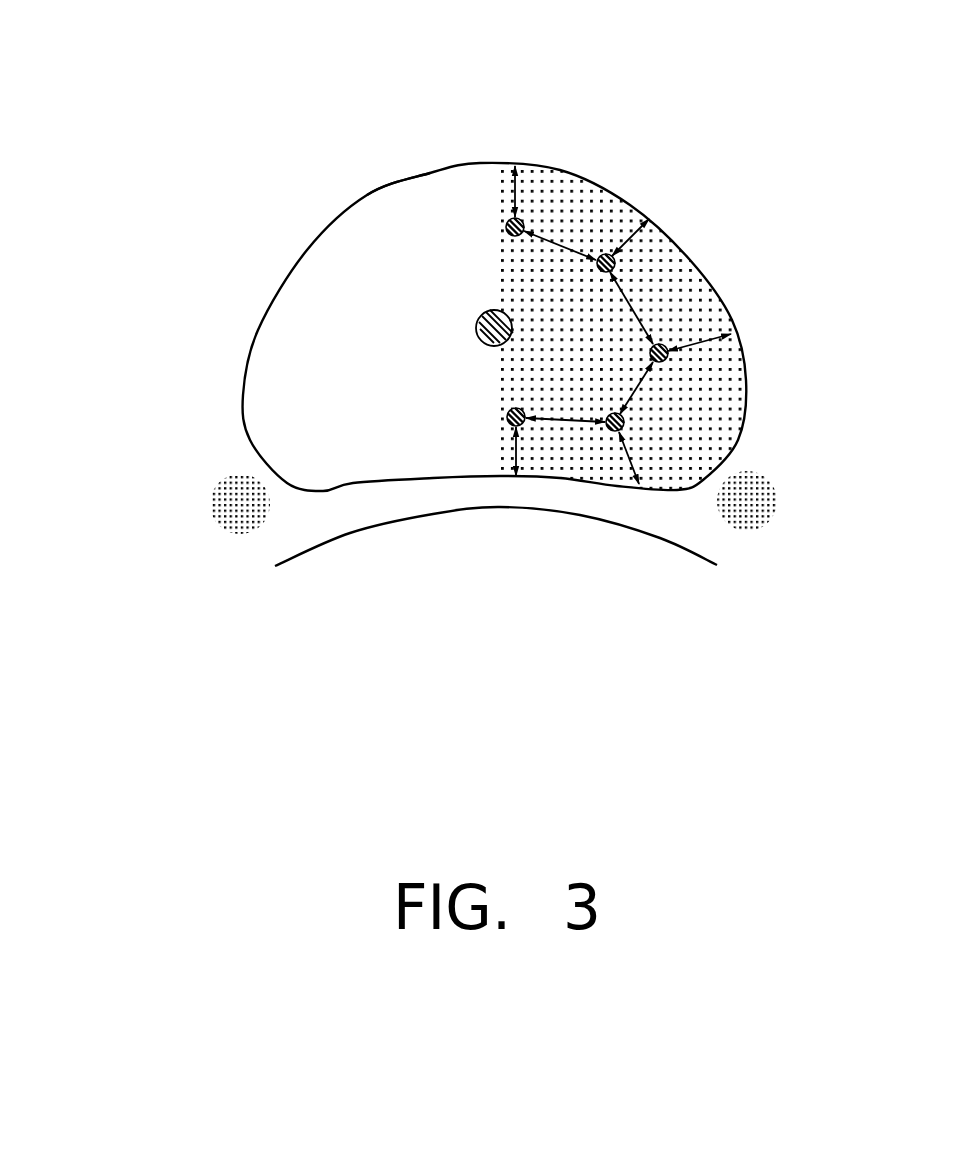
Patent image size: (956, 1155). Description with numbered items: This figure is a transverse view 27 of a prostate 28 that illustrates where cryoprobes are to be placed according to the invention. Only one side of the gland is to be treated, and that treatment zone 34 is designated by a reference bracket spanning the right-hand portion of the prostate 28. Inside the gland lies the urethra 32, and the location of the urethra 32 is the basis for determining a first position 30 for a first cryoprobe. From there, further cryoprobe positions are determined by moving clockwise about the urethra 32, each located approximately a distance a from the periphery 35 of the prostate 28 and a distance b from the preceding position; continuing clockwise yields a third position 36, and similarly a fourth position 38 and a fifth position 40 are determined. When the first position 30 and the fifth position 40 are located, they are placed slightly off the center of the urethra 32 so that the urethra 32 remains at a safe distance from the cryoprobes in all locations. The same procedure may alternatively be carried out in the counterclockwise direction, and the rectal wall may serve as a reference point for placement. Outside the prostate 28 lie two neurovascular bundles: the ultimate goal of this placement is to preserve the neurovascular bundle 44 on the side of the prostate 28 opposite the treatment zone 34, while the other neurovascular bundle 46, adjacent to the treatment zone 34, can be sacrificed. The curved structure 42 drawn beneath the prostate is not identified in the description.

The transverse view 27 is at (200, 311).
The prostate 28 is at (303, 254).
The first position 30 is at (523, 221).
The urethra 32 is at (611, 256).
The treatment zone 34 is at (747, 78).
The periphery 35 is at (368, 196).
The third position 36 is at (666, 345).
The fourth position 38 is at (610, 430).
The fifth position 40 is at (509, 420).
The underlying tissue boundary 42 is at (662, 541).
The neurovascular bundle 44 is at (234, 512).
The other neurovascular bundle 46 is at (755, 500).